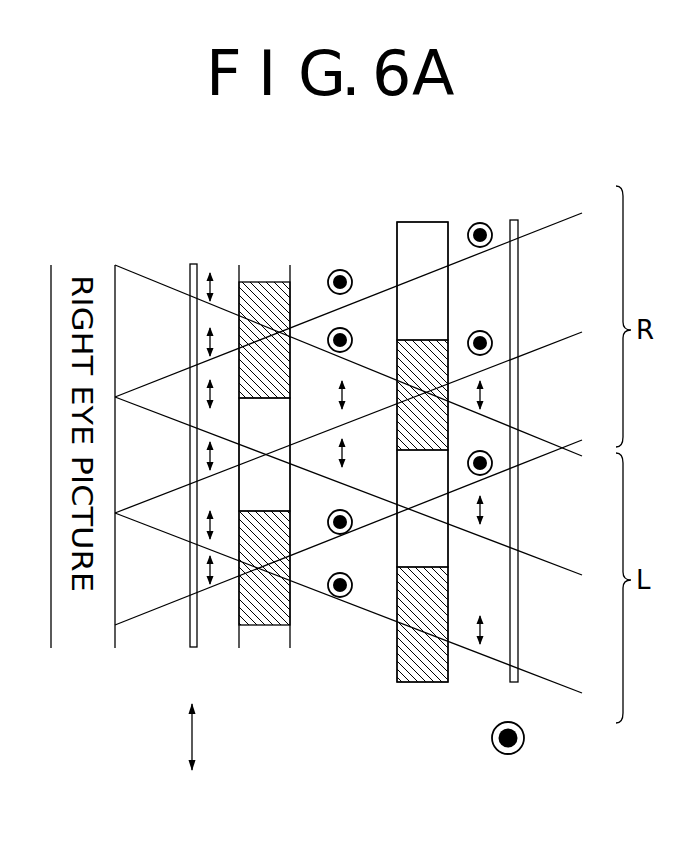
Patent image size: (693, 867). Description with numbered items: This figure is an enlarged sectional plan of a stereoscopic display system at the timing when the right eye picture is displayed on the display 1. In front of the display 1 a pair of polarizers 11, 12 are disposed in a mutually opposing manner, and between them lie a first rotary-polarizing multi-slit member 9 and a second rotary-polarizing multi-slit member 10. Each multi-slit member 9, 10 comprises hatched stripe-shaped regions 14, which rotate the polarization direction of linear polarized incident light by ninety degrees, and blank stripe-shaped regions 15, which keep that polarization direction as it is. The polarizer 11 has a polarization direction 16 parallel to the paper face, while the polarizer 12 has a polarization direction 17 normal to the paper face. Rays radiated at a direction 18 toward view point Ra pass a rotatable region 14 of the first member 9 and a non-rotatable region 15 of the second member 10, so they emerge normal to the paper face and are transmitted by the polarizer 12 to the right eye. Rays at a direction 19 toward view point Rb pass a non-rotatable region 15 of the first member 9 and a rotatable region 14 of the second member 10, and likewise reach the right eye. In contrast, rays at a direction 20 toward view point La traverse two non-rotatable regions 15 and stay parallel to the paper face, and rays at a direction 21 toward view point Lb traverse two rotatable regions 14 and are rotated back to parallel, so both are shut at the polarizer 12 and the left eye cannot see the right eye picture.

The display 1 is at (115, 265).
The first rotary-polarizing multi-slit member 9 is at (233, 259).
The second rotary-polarizing multi-slit member 10 is at (392, 674).
The polarizer 11 is at (189, 272).
The polarizer 12 is at (513, 220).
The stripe-shaped region 14 is at (272, 293).
The stripe-shaped region 15 is at (418, 230).
The polarization direction 16 is at (187, 730).
The polarization direction 17 is at (492, 738).
The direction 18 is at (548, 226).
The direction 19 is at (550, 344).
The direction 20 is at (557, 566).
The direction 21 is at (564, 453).